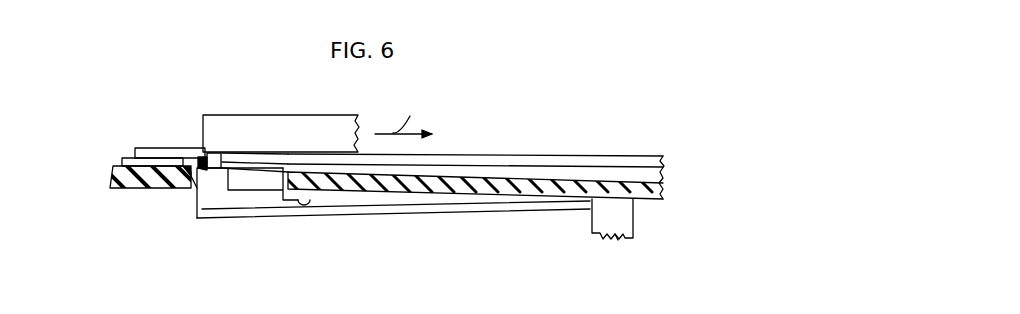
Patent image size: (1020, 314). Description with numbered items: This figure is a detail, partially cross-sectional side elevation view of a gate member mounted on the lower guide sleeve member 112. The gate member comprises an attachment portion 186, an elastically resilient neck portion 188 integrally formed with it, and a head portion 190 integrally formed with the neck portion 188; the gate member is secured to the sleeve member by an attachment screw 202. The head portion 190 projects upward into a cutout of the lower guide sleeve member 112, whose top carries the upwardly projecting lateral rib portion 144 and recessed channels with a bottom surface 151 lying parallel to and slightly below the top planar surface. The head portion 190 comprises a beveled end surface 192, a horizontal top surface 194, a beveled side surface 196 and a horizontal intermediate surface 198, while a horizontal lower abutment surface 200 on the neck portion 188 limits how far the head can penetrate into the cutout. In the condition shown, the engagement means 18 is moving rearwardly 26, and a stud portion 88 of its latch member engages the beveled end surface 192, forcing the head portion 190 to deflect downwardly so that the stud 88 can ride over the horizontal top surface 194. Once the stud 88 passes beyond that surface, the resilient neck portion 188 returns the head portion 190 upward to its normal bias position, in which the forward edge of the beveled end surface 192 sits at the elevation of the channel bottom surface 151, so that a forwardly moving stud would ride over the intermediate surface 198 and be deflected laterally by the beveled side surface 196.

The engagement means 18 is at (351, 115).
The rearward direction of movement 26 is at (419, 121).
The stud portion 88 is at (210, 160).
The lower guide sleeve member 112 is at (658, 190).
The lateral rib portion 144 is at (597, 155).
The bottom surface 151 is at (135, 162).
The attachment portion 186 is at (637, 215).
The neck portion 188 is at (517, 207).
The head portion 190 is at (207, 217).
The beveled end surface 192 is at (188, 180).
The horizontal top surface 194 is at (280, 160).
The beveled side surface 196 is at (257, 167).
The horizontal intermediate surface 198 is at (232, 188).
The lower abutment surface 200 is at (303, 200).
The attachment screw 202 is at (618, 240).